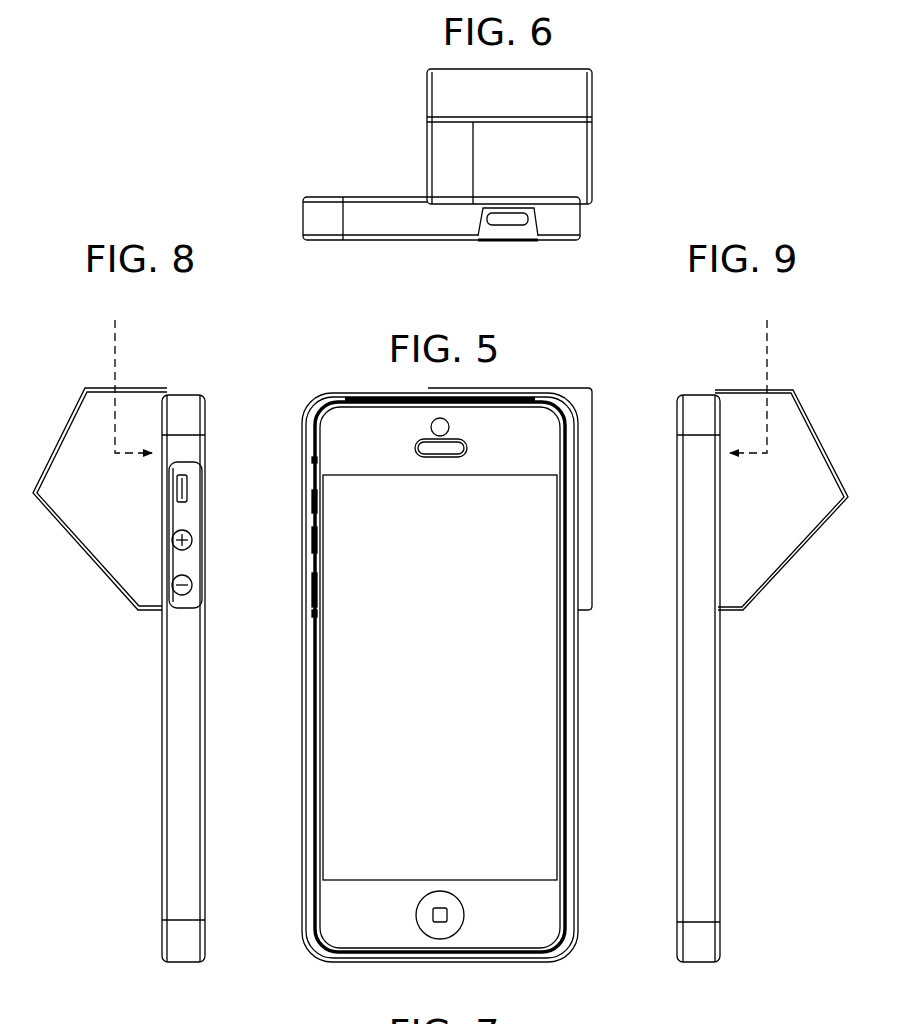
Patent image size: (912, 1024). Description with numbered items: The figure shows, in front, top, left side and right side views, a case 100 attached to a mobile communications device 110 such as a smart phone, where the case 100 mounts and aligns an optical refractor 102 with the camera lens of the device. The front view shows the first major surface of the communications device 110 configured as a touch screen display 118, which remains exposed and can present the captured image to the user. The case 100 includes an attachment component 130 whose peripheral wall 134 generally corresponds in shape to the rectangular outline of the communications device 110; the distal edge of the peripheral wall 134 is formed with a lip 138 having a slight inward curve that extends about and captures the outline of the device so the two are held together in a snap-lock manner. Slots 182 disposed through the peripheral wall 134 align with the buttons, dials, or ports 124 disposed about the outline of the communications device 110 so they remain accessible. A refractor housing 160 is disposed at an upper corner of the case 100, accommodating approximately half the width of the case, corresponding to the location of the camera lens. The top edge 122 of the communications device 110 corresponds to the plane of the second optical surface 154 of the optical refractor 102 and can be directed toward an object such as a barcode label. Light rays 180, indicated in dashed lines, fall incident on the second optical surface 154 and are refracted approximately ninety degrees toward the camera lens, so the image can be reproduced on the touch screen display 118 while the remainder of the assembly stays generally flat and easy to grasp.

In FIG. 5, the case 100 is at (578, 612).
In FIG. 9, the case 100 is at (677, 780).
In FIG. 6, the optical refractor 102 is at (482, 177).
In FIG. 6, the mobile communications device 110 is at (383, 196).
In FIG. 5, the mobile communications device 110 is at (547, 913).
In FIG. 9, the mobile communications device 110 is at (720, 743).
In FIG. 5, the touch screen display 118 is at (380, 703).
In FIG. 6, the top edge 122 is at (503, 230).
In FIG. 5, the top edge 122 is at (527, 398).
In FIG. 8, the buttons, dials, or ports 124 is at (188, 490).
In FIG. 8, the attachment component 130 is at (182, 395).
In FIG. 5, the attachment component 130 is at (312, 952).
In FIG. 9, the attachment component 130 is at (698, 395).
In FIG. 5, the peripheral wall 134 is at (578, 708).
In FIG. 5, the lip 138 is at (312, 624).
In FIG. 6, the second optical surface 154 is at (563, 156).
In FIG. 8, the second optical surface 154 is at (100, 385).
In FIG. 6, the refractor housing 160 is at (573, 93).
In FIG. 8, the refractor housing 160 is at (100, 553).
In FIG. 5, the refractor housing 160 is at (593, 455).
In FIG. 9, the refractor housing 160 is at (822, 437).
In FIG. 8, the light rays 180 is at (115, 352).
In FIG. 9, the light rays 180 is at (767, 358).
In FIG. 8, the slots 182 is at (197, 603).